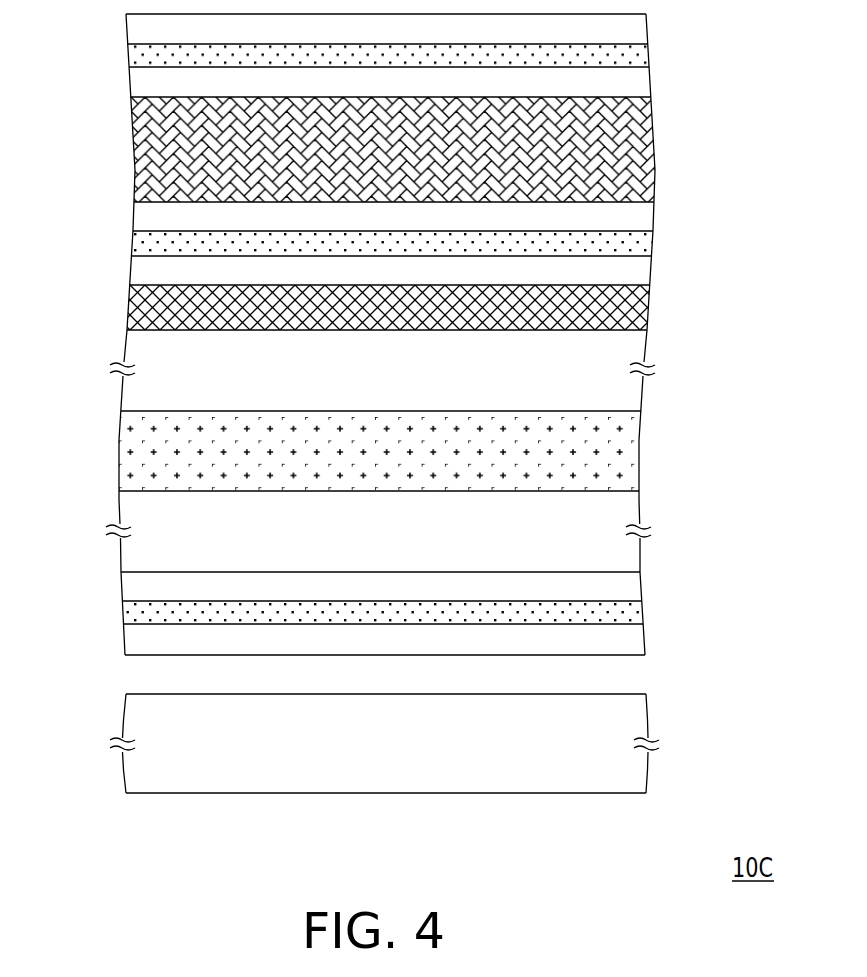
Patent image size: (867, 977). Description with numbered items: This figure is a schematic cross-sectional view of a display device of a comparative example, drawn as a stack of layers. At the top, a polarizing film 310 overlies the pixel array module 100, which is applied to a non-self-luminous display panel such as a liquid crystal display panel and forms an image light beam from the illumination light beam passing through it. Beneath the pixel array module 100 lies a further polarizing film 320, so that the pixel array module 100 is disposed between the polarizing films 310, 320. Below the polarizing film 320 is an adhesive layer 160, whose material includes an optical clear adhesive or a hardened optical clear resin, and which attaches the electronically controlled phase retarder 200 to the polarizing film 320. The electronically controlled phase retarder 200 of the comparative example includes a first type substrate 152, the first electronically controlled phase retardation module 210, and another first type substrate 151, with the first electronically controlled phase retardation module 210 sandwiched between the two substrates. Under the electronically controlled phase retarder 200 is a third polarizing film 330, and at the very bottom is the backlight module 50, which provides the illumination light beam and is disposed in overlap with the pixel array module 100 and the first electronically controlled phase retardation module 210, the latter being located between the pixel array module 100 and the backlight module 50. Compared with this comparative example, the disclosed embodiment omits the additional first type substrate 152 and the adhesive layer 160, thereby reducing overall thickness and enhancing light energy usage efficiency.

The polarizing film 310 is at (108, 14).
The pixel array module 100 is at (108, 97).
The polarizing film 320 is at (108, 202).
The adhesive layer 160 is at (633, 312).
The first type substrate 152 is at (632, 348).
The electronically controlled phase retarder 200 is at (386, 451).
The first electronically controlled phase retardation module 210 is at (624, 455).
The first type substrate 151 is at (622, 512).
The polarizing film 330 is at (108, 572).
The backlight module 50 is at (108, 694).